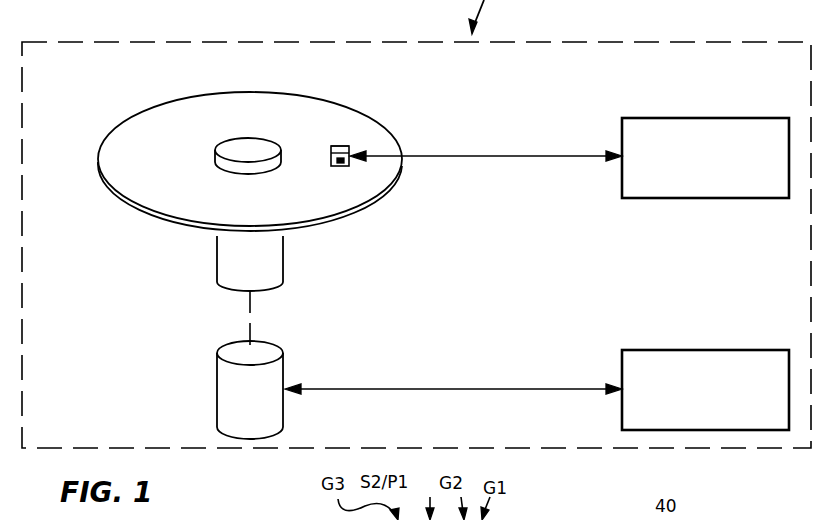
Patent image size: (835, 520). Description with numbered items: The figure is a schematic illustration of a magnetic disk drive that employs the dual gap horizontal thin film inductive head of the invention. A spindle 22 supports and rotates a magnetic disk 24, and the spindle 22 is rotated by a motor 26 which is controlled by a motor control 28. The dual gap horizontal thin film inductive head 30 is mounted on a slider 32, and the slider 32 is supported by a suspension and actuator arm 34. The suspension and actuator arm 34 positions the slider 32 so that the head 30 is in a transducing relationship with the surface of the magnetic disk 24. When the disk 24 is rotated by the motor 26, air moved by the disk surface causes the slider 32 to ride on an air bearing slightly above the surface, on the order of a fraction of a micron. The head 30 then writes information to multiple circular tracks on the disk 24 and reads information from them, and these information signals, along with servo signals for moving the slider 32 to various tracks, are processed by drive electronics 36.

The spindle 22 is at (217, 262).
The magnetic disk 24 is at (133, 130).
The motor 26 is at (217, 393).
The motor control 28 is at (703, 350).
The dual gap horizontal thin film inductive head 30 is at (340, 166).
The slider 32 is at (341, 146).
The suspension and actuator arm 34 is at (480, 156).
The drive electronics 36 is at (703, 118).